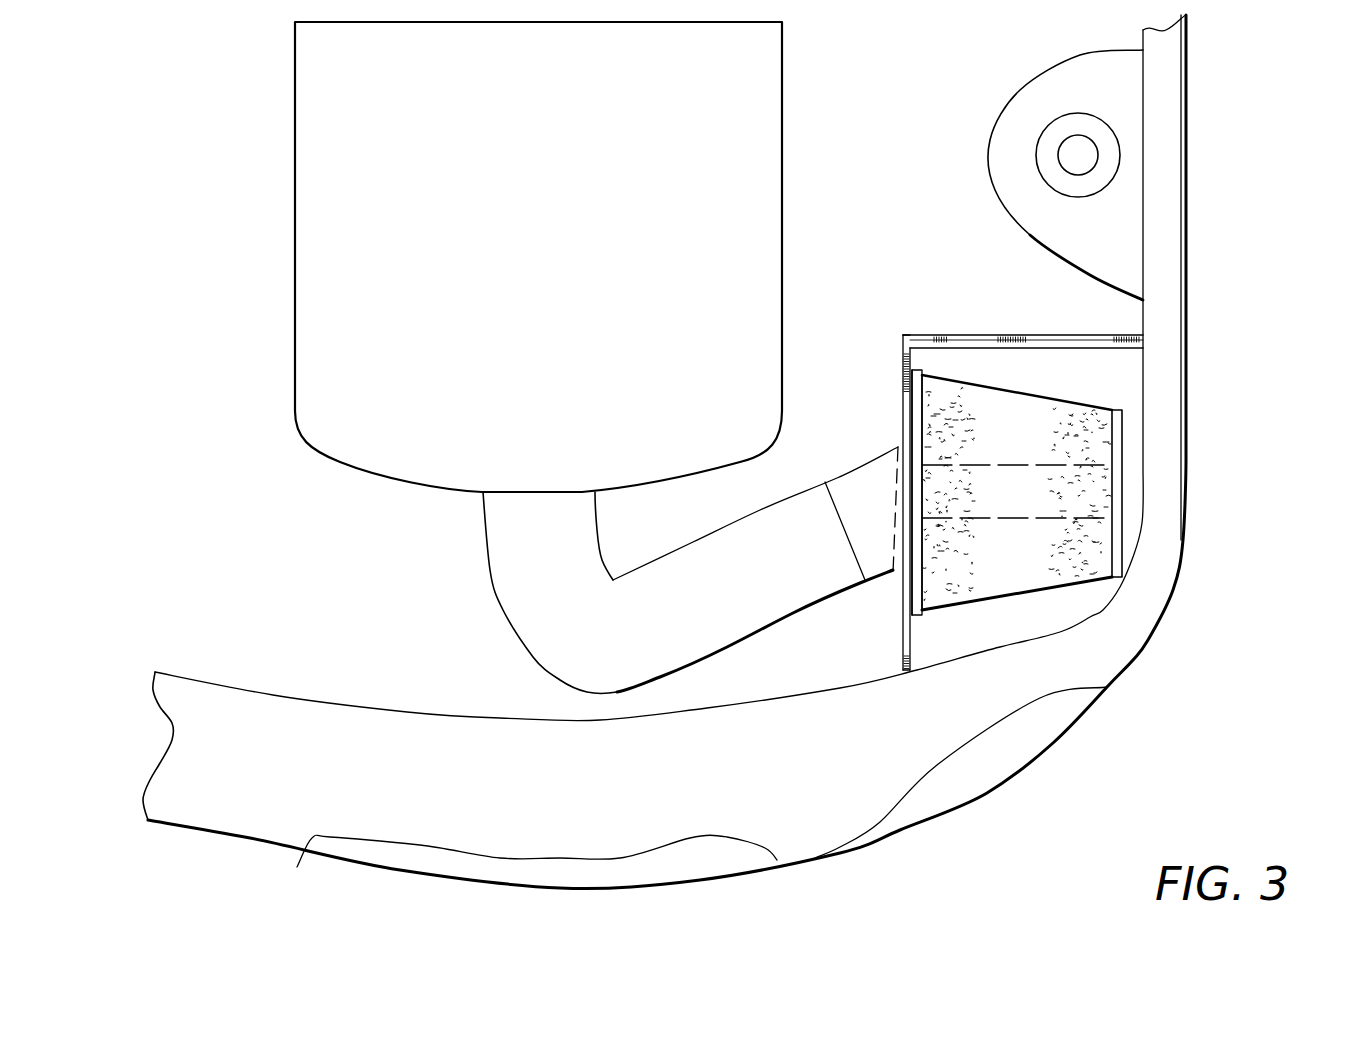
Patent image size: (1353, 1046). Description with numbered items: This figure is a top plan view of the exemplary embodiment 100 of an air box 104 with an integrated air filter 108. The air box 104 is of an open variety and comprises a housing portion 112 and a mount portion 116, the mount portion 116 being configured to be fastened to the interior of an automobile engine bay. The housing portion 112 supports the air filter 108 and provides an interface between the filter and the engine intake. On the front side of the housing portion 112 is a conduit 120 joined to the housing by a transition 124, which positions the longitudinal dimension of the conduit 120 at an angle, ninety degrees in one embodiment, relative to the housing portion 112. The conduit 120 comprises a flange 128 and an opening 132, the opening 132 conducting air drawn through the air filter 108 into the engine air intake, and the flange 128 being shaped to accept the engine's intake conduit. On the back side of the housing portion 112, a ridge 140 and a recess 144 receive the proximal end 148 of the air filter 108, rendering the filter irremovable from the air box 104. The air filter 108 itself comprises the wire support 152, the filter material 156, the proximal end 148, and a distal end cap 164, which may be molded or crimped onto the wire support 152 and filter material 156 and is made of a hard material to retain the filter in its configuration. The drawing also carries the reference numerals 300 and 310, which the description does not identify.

The exemplary embodiment 100 is at (1217, 292).
The air box 104 is at (976, 573).
The air filter 108 is at (1097, 512).
The housing portion 112 is at (897, 663).
The mount portion 116 is at (900, 350).
The conduit 120 is at (873, 458).
The transition 124 is at (894, 574).
The flange 128 is at (830, 503).
The opening 132 is at (843, 545).
The ridge 140 is at (915, 371).
The recess 144 is at (923, 374).
The proximal end 148 is at (927, 400).
The wire support 152 is at (1075, 517).
The filter material 156 is at (1033, 593).
The distal end cap 164 is at (1095, 403).
The lower body member 300 is at (315, 647).
The tank 310 is at (293, 177).